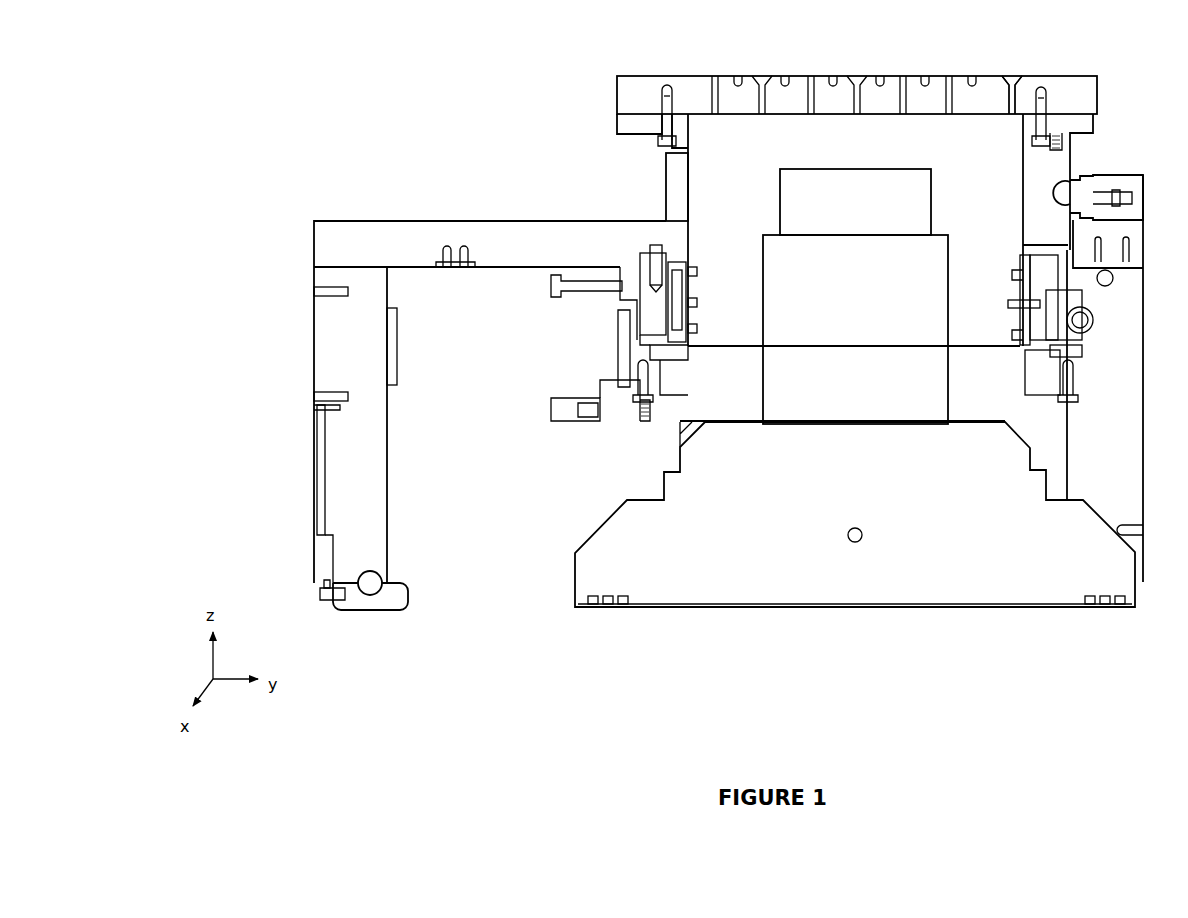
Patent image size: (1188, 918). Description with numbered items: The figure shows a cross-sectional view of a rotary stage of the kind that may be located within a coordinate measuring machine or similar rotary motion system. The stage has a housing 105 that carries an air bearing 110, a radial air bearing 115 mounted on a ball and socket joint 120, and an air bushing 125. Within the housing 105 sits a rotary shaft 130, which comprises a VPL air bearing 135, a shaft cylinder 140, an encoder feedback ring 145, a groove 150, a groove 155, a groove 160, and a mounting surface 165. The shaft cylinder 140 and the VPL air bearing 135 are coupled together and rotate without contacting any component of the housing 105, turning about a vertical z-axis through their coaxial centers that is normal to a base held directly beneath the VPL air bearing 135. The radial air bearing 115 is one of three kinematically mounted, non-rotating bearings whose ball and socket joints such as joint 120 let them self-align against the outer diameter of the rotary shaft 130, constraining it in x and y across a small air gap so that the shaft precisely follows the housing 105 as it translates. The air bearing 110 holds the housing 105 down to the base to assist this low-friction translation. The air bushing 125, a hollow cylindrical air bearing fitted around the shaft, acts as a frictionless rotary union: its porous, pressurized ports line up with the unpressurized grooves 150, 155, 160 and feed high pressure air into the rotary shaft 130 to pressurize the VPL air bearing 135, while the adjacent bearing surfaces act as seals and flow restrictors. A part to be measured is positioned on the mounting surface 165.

The housing 105 is at (311, 243).
The air bearing 110 is at (397, 622).
The radial air bearing 115 is at (1074, 151).
The joint 120 is at (1074, 189).
The air bushing 125 is at (671, 312).
The rotary shaft 130 is at (612, 63).
The VPL air bearing 135 is at (593, 530).
The shaft cylinder 140 is at (685, 197).
The encoder feedback ring 145 is at (613, 122).
The groove 150 is at (699, 271).
The groove 155 is at (699, 302).
The groove 160 is at (699, 329).
The mounting surface 165 is at (991, 71).